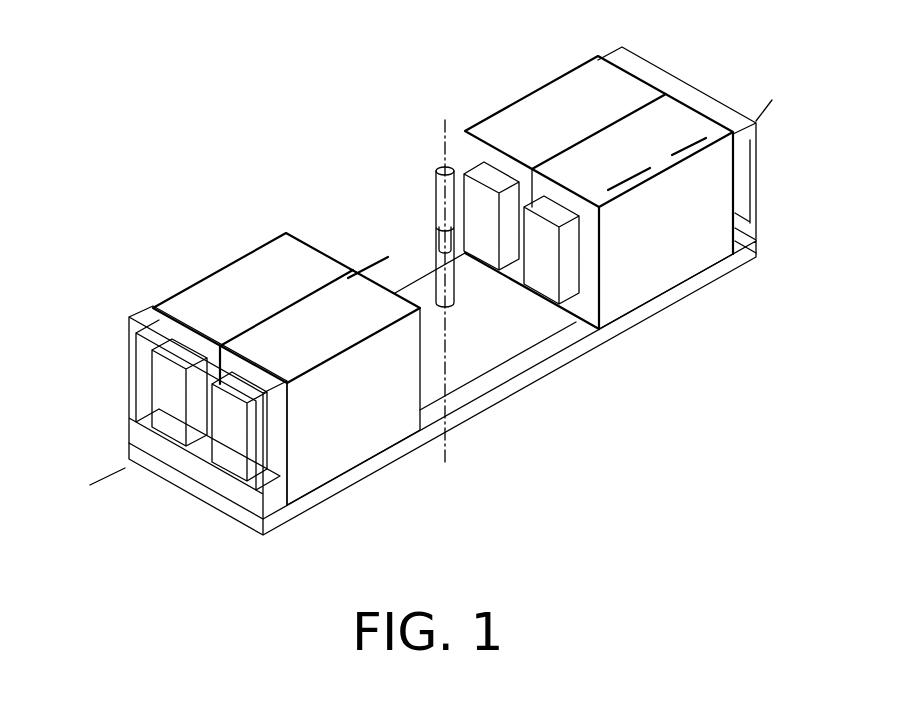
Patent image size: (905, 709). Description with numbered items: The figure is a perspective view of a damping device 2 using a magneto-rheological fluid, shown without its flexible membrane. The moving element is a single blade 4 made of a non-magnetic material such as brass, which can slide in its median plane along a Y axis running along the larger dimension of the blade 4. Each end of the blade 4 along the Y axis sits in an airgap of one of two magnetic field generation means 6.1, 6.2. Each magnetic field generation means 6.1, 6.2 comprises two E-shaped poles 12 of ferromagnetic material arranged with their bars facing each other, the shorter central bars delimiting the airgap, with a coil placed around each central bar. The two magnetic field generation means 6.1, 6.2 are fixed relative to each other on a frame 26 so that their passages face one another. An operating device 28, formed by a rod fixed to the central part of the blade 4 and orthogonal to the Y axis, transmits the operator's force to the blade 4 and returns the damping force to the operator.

The damping device 2 is at (416, 269).
The blade 4 is at (420, 283).
The magnetic field generation means 6.1 is at (595, 176).
The magnetic field generation means 6.2 is at (221, 278).
The pole 12 is at (584, 84).
The frame 26 is at (546, 372).
The operating device 28 is at (437, 187).
The Y axis Y is at (102, 478).